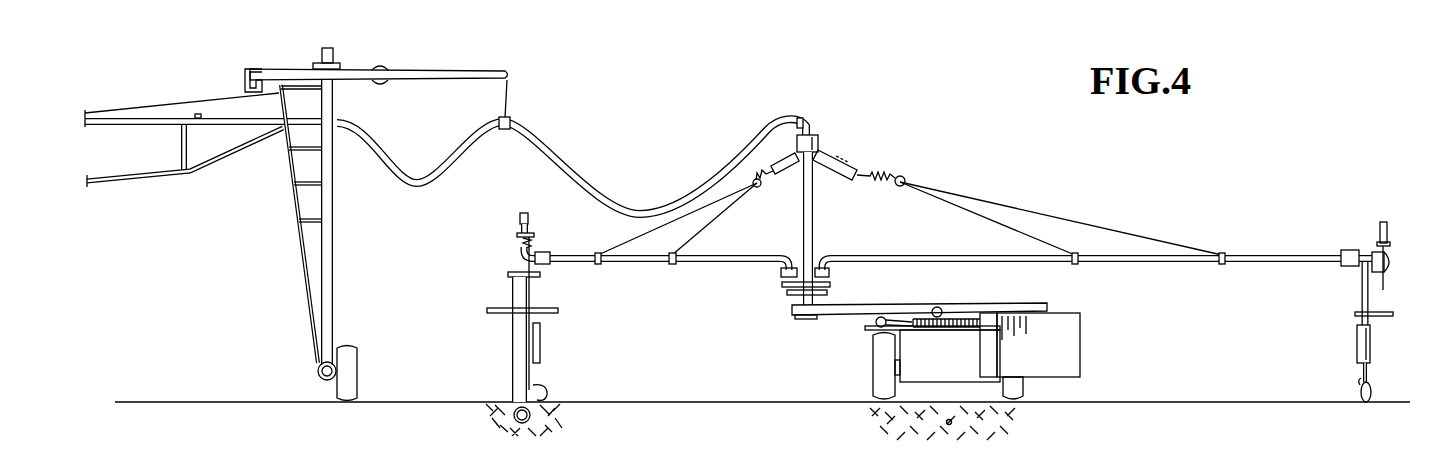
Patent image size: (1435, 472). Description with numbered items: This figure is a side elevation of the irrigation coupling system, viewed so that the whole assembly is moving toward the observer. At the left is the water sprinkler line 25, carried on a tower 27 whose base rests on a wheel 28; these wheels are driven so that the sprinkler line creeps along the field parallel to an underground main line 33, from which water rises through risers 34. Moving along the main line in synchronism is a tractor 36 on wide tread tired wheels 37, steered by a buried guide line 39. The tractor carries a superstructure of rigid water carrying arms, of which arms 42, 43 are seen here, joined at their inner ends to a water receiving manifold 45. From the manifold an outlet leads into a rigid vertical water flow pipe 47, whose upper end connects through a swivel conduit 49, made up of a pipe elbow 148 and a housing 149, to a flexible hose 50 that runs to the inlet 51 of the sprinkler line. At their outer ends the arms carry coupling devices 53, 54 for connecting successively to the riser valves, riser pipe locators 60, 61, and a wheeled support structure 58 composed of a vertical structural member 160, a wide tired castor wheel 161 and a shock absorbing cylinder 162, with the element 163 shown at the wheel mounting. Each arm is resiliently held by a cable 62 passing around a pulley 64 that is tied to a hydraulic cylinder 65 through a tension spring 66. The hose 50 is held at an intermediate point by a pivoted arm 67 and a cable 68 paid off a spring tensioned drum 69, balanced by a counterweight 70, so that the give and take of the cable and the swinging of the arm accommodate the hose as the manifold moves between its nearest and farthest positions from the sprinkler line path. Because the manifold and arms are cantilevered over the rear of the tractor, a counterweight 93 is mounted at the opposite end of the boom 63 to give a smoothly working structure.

The water sprinkler line 25 is at (150, 125).
The tower 27 is at (333, 300).
The wheel 28 is at (356, 365).
The underground main line 33 is at (513, 420).
The riser 34 is at (513, 340).
The tractor 36 is at (925, 385).
The wide tread tired wheel 37 is at (876, 346).
The guide line 39 is at (949, 425).
The water carrying arm 42 is at (635, 262).
The water carrying arm 43 is at (1274, 256).
The water receiving manifold 45 is at (782, 290).
The water flow pipe 47 is at (814, 212).
The swivel conduit 49 is at (822, 133).
The flexible hose 50 is at (557, 160).
The inlet 51 is at (340, 113).
The coupling device 53 is at (505, 246).
The coupling device 54 is at (1398, 207).
The wheeled support structure 58 is at (1352, 356).
The riser pipe locator 60 is at (500, 308).
The riser pipe locator 61 is at (1381, 318).
The cable 62 is at (617, 240).
The boom 63 is at (918, 301).
The pulley 64 is at (906, 181).
The hydraulic cylinder 65 is at (852, 172).
The tension spring 66 is at (882, 174).
The pivoted arm 67 is at (361, 71).
The cable 68 is at (507, 95).
The spring tensioned drum 69 is at (383, 68).
The counterweight 70 is at (252, 68).
The counterweight 93 is at (1068, 366).
The pipe elbow 148 is at (808, 120).
The housing 149 is at (820, 143).
The vertical structural member 160 is at (1361, 292).
The wide tired wheel 161 is at (1359, 390).
The shock absorbing cylinder 162 is at (1356, 338).
The rod 163 is at (1370, 370).